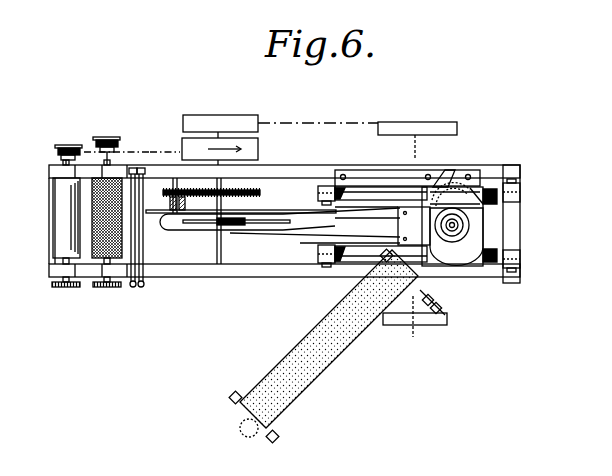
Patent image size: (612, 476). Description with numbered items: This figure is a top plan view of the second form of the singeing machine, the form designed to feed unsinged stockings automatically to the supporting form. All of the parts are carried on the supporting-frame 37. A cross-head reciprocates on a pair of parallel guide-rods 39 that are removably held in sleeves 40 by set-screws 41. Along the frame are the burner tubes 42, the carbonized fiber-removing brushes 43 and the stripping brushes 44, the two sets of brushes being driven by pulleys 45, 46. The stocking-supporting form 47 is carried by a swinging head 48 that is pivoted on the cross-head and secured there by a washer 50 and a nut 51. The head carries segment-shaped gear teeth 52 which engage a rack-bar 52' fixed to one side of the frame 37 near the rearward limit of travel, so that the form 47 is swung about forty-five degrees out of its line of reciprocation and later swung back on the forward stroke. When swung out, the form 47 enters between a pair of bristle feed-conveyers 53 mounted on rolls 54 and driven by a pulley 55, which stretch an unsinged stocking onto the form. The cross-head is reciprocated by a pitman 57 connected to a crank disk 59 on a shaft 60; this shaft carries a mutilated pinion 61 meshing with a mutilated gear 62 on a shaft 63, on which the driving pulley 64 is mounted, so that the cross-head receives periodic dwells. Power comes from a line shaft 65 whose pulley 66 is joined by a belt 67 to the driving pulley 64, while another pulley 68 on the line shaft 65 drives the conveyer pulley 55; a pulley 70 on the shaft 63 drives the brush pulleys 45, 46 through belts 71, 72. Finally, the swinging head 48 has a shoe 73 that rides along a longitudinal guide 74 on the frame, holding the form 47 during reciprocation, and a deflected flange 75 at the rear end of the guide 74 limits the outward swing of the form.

The supporting-frame 37 is at (247, 277).
The guide-rods 39 is at (360, 190).
The sleeves 40 is at (321, 264).
The set-screws 41 is at (326, 268).
The burner tubes 42 is at (135, 268).
The carbonized fiber-removing brushes 43 is at (97, 243).
The stripping brushes 44 is at (62, 222).
The pulley 45 is at (106, 137).
The pulley 46 is at (66, 145).
The stocking-supporting form 47 is at (296, 220).
The swinging head 48 is at (474, 228).
The washer 50 is at (462, 240).
The nut 51 is at (452, 232).
The gear teeth 52 is at (490, 212).
The rack-bar 52' is at (488, 174).
The feed-conveyers 53 is at (320, 332).
The rolls 54 is at (276, 422).
The pulley 55 is at (442, 308).
The pitman 57 is at (354, 218).
The crank disk 59 is at (155, 217).
The shaft 60 is at (178, 231).
The mutilated pinion 61 is at (174, 188).
The mutilated gear 62 is at (261, 192).
The shaft 63 is at (224, 252).
The driving pulley 64 is at (240, 120).
The line shaft 65 is at (415, 122).
The pulley 66 is at (457, 128).
The belt 67 is at (316, 123).
The pulley 68 is at (427, 326).
The pulley 70 is at (258, 149).
The belt 71 is at (156, 150).
The belt 72 is at (129, 151).
The shoe 73 is at (438, 182).
The guide 74 is at (350, 180).
The deflected flange 75 is at (442, 182).